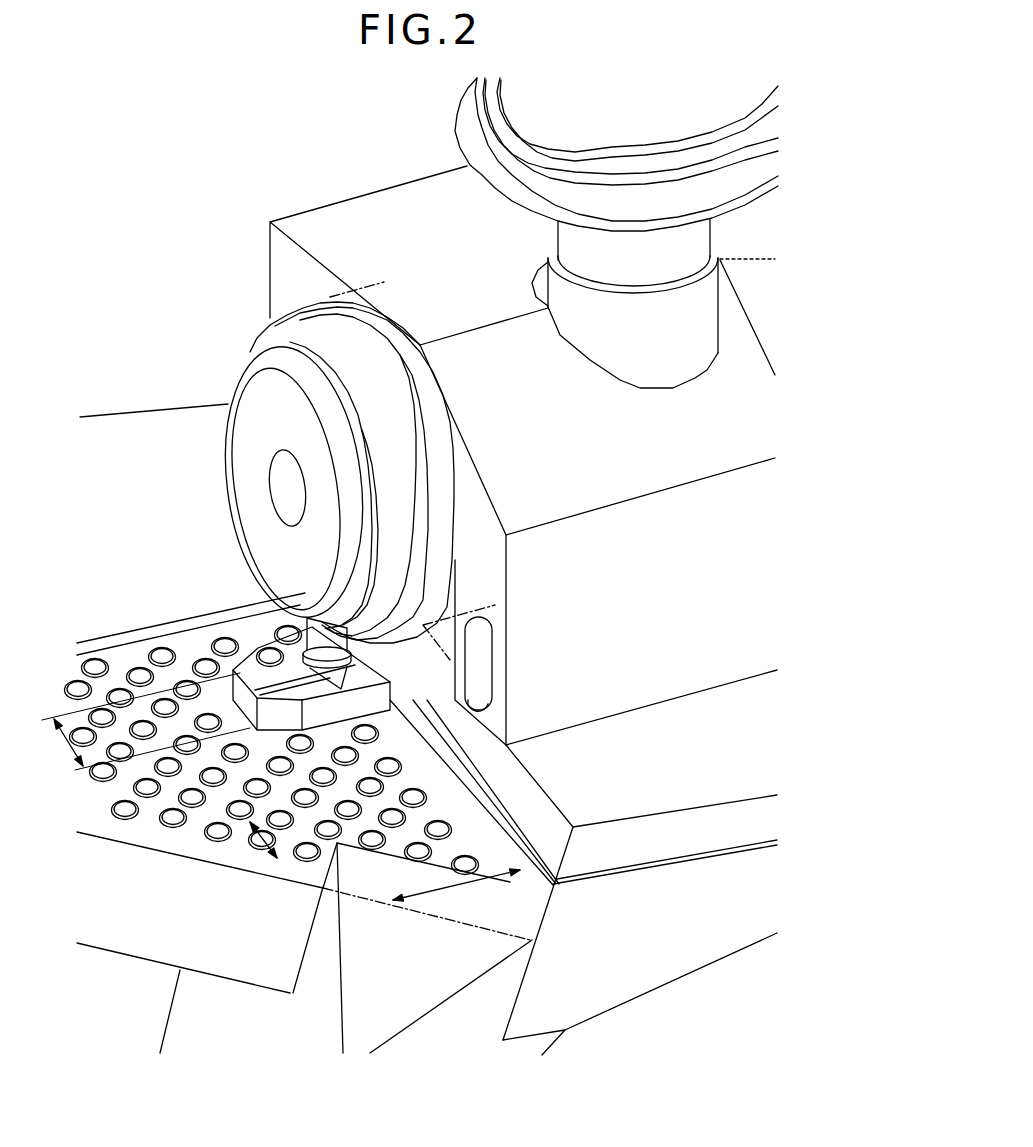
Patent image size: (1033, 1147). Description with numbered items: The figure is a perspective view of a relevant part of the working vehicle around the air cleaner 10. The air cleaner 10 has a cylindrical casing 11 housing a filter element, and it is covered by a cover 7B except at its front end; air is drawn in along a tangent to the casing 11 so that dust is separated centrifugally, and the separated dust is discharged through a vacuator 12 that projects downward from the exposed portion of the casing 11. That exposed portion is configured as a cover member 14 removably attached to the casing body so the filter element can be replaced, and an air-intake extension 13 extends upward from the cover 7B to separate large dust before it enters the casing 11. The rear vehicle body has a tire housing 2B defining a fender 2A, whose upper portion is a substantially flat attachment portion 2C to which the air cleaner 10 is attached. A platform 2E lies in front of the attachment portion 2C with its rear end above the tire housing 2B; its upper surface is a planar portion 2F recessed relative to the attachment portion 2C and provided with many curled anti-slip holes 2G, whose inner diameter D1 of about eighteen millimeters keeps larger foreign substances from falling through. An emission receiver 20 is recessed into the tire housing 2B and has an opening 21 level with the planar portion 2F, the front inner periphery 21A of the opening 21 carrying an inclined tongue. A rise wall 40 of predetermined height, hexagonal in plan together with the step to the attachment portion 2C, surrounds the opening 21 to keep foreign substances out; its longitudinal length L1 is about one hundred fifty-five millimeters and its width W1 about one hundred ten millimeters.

The air cleaner 10 is at (236, 330).
The casing 11 is at (372, 288).
The vacuator 12 is at (325, 633).
The air-intake extension 13 is at (750, 244).
The cover member 14 is at (236, 442).
The cover 7B is at (680, 470).
The emission receiver 20 is at (307, 690).
The opening 21 is at (275, 660).
The front inner periphery 21A is at (278, 683).
The rise wall 40 is at (378, 680).
The fender 2A is at (718, 933).
The tire housing 2B is at (676, 963).
The attachment portion 2C is at (693, 712).
The platform 2E is at (132, 655).
The planar portion 2F is at (192, 650).
The anti-slip holes 2G is at (472, 862).
The width W1 is at (61, 742).
The inner diameter D1 is at (260, 847).
The longitudinal length L1 is at (456, 889).